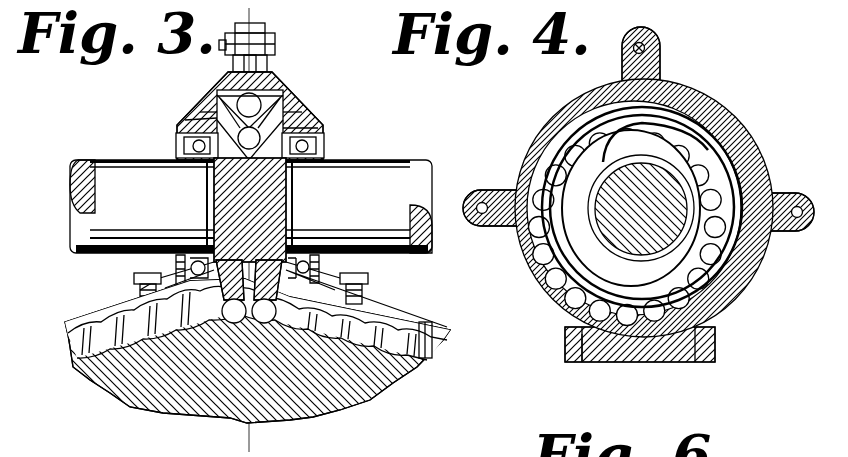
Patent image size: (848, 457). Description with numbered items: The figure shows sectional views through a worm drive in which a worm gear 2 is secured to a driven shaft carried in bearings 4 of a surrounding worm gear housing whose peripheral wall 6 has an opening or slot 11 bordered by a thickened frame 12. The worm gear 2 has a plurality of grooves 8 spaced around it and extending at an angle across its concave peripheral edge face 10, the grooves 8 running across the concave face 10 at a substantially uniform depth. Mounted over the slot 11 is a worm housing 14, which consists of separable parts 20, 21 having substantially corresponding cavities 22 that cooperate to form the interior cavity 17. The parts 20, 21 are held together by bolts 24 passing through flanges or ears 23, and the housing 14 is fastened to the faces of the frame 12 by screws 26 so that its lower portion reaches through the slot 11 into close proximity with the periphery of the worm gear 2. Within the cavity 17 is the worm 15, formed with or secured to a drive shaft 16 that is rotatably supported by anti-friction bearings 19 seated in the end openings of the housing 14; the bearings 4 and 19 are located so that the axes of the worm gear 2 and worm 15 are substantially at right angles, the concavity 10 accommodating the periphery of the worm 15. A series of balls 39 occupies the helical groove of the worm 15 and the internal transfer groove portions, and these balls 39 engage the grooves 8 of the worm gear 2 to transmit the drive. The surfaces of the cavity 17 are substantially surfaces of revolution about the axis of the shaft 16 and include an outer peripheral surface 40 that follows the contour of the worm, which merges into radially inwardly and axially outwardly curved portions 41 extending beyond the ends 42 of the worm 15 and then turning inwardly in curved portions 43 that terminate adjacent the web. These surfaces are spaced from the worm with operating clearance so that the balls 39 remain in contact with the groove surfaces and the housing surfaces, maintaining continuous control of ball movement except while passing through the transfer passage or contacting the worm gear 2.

In FIG. 3, the worm gear 2 is at (244, 351).
In FIG. 4, the worm gear 2 is at (658, 362).
In FIG. 3, the bearings 4 is at (254, 18).
In FIG. 3, the peripheral portion or wall 6 is at (396, 330).
In FIG. 4, the peripheral portion or wall 6 is at (714, 344).
In FIG. 3, the grooves 8 is at (429, 331).
In FIG. 3, the concave face 10 is at (68, 343).
In FIG. 3, the opening or slot 11 is at (264, 270).
In FIG. 3, the thickened portion or frame 12 is at (378, 297).
In FIG. 4, the worm housing 14 is at (754, 126).
In FIG. 3, the worm 15 is at (200, 110).
In FIG. 4, the worm 15 is at (556, 114).
In FIG. 3, the drive shaft 16 is at (410, 168).
In FIG. 4, the drive shaft 16 is at (662, 252).
In FIG. 4, the cavity 17 is at (720, 104).
In FIG. 3, the anti-friction bearings 19 is at (236, 147).
In FIG. 3, the separable part 20 is at (172, 266).
In FIG. 3, the separable part 21 is at (295, 115).
In FIG. 3, the cavities 22 is at (268, 106).
In FIG. 3, the flanges or ears 23 is at (244, 26).
In FIG. 4, the flanges or ears 23 is at (626, 62).
In FIG. 3, the bolts 24 is at (264, 46).
In FIG. 4, the bolts 24 is at (648, 50).
In FIG. 3, the screws 26 is at (354, 276).
In FIG. 3, the balls 39 is at (320, 132).
In FIG. 4, the balls 39 is at (684, 100).
In FIG. 3, the outer peripheral surface 40 is at (266, 94).
In FIG. 4, the outer peripheral surface 40 is at (738, 303).
In FIG. 3, the curved portions 41 is at (232, 100).
In FIG. 3, the ends of the worm 42 is at (200, 112).
In FIG. 3, the curved portions 43 is at (185, 120).